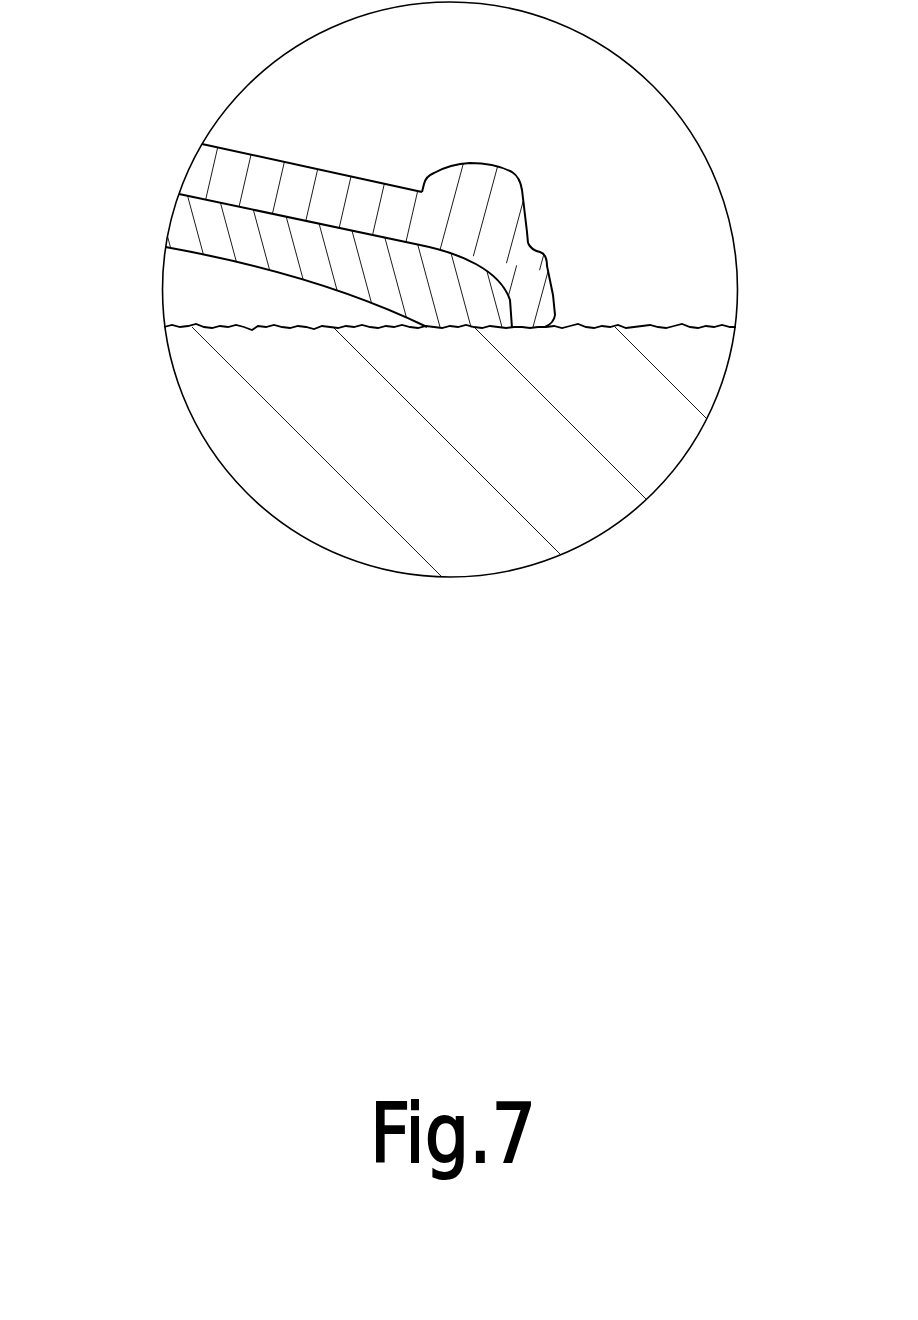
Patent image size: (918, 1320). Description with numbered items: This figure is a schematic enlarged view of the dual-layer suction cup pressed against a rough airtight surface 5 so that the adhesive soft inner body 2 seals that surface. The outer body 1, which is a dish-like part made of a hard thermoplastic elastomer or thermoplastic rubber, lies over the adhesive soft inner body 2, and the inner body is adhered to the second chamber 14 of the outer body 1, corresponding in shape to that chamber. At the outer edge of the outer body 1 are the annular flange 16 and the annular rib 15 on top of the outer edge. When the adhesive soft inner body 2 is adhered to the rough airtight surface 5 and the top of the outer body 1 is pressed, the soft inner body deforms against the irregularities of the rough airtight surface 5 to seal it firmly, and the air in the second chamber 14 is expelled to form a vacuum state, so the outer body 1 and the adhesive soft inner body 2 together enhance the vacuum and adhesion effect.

The outer body 1 is at (300, 193).
The adhesive soft inner body 2 is at (252, 247).
The rough airtight surface 5 is at (613, 413).
The second chamber 14 is at (272, 306).
The annular rib 15 is at (482, 185).
The annular flange 16 is at (533, 290).